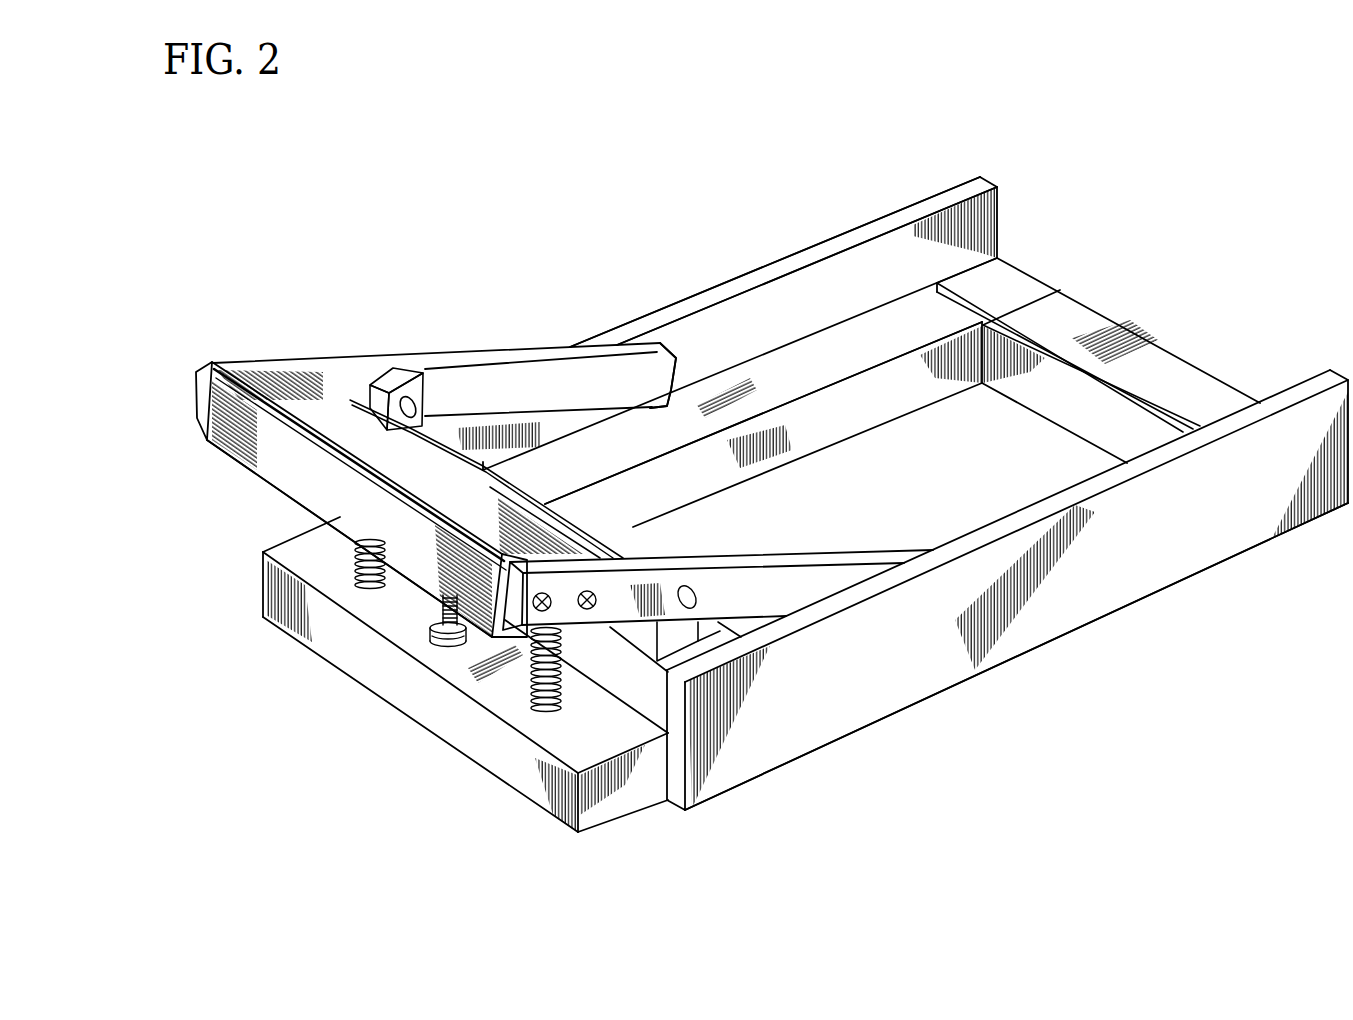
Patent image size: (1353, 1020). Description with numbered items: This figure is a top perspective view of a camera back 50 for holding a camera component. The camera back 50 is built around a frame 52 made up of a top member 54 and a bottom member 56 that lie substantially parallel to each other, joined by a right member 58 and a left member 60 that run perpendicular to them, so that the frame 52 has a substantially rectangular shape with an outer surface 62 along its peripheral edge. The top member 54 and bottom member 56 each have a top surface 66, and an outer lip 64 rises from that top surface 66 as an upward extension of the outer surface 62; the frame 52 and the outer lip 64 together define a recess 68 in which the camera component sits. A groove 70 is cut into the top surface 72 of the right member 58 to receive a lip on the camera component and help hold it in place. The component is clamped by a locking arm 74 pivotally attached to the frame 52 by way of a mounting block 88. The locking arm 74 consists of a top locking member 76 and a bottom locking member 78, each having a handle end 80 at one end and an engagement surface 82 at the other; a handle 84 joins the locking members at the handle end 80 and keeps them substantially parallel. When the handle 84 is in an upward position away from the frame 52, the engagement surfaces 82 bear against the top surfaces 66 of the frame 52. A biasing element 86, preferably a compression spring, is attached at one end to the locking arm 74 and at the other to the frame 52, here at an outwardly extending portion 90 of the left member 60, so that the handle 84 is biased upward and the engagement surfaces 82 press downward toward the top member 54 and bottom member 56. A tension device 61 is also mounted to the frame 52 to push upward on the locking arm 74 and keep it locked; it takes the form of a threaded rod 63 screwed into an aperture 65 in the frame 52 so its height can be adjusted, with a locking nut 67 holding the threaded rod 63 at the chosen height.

The camera back 50 is at (712, 135).
The frame 52 is at (937, 194).
The top member 54 is at (868, 222).
The bottom member 56 is at (1080, 590).
The right member 58 is at (1025, 273).
The left member 60 is at (604, 521).
The tension device 61 is at (445, 595).
The outer surface 62 is at (1180, 545).
The threaded rod 63 is at (395, 652).
The outer lip 64 is at (625, 330).
The aperture 65 is at (455, 647).
The top surface 66 is at (815, 362).
The locking nut 67 is at (470, 640).
The recess 68 is at (1047, 472).
The groove 70 is at (1030, 352).
The top surface 72 is at (1113, 320).
The locking arm 74 is at (263, 358).
The top locking member 76 is at (443, 345).
The bottom locking member 78 is at (757, 595).
The handle end 80 is at (623, 603).
The engagement surface 82 is at (688, 396).
The handle 84 is at (288, 497).
The biasing element 86 is at (390, 555).
The mounting block 88 is at (395, 378).
The outwardly extending portion 90 is at (540, 793).